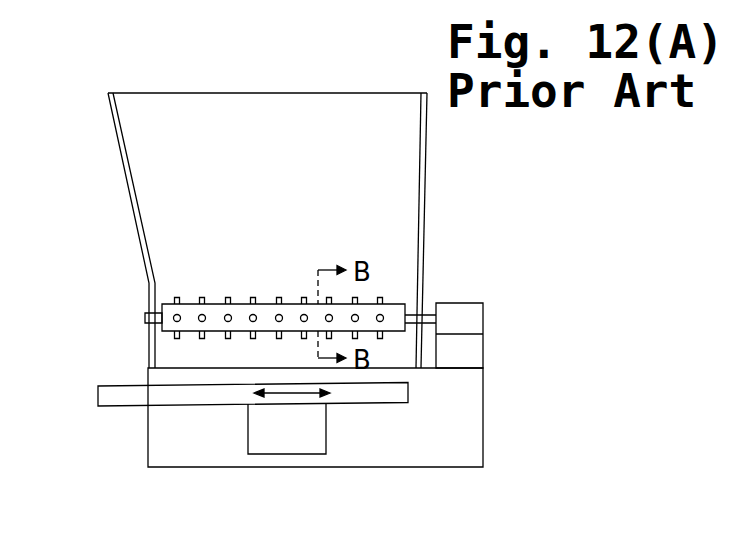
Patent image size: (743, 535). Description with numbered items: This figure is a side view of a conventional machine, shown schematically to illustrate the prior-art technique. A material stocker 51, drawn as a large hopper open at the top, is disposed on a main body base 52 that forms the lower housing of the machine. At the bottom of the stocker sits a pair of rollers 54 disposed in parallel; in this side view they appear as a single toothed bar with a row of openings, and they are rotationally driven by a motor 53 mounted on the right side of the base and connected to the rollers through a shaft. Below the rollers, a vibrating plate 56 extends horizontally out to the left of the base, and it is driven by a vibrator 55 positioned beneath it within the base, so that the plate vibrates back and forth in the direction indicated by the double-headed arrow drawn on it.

The material stocker 51 is at (427, 142).
The main body base 52 is at (458, 414).
The motor 53 is at (459, 308).
The pair of rollers 54 is at (246, 313).
The vibrator 55 is at (253, 447).
The vibrating plate 56 is at (123, 393).